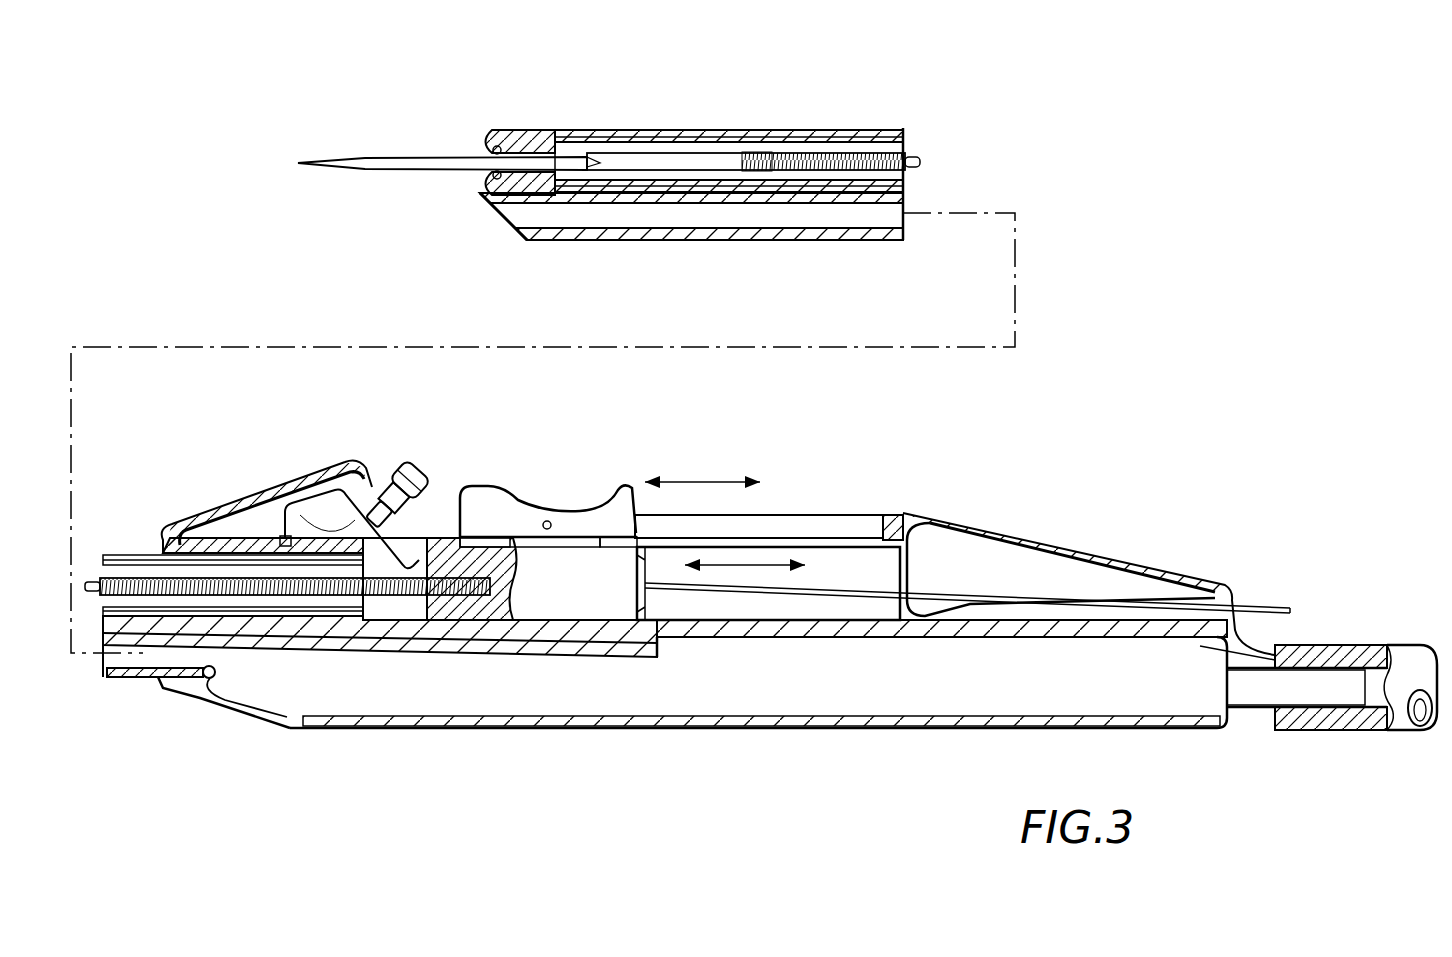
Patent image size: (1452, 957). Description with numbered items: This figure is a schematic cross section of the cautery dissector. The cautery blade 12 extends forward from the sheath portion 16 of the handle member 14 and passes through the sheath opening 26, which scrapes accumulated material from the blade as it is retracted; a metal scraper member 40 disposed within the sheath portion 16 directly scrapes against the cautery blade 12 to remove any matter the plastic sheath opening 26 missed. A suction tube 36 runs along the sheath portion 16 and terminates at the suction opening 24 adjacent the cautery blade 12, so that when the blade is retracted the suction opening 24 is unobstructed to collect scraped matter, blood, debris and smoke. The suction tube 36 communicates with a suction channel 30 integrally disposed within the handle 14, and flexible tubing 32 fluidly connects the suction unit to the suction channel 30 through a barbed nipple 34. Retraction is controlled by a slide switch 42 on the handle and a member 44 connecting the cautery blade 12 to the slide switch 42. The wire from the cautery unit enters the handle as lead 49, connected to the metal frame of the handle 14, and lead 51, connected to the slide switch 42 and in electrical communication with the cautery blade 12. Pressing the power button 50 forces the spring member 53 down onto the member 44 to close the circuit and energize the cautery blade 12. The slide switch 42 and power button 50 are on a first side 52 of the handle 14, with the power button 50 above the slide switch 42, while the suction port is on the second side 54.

The cautery blade 12 is at (375, 152).
The sheath opening 26 is at (487, 152).
The scraper member 40 is at (525, 145).
The member 44 is at (790, 148).
The sheath portion 16 is at (850, 128).
The suction opening 24 is at (520, 212).
The suction tube 36 is at (795, 240).
The spring member 53 is at (312, 514).
The power button 50 is at (410, 472).
The slide switch 42 is at (528, 512).
The first side 52 is at (815, 515).
The lead 51 is at (928, 585).
The lead 49 is at (1065, 595).
The flexible tubing 32 is at (1362, 645).
The barbed nipple 34 is at (1340, 732).
The suction channel 30 is at (990, 683).
The handle member 14 is at (672, 730).
The second side 54 is at (808, 735).